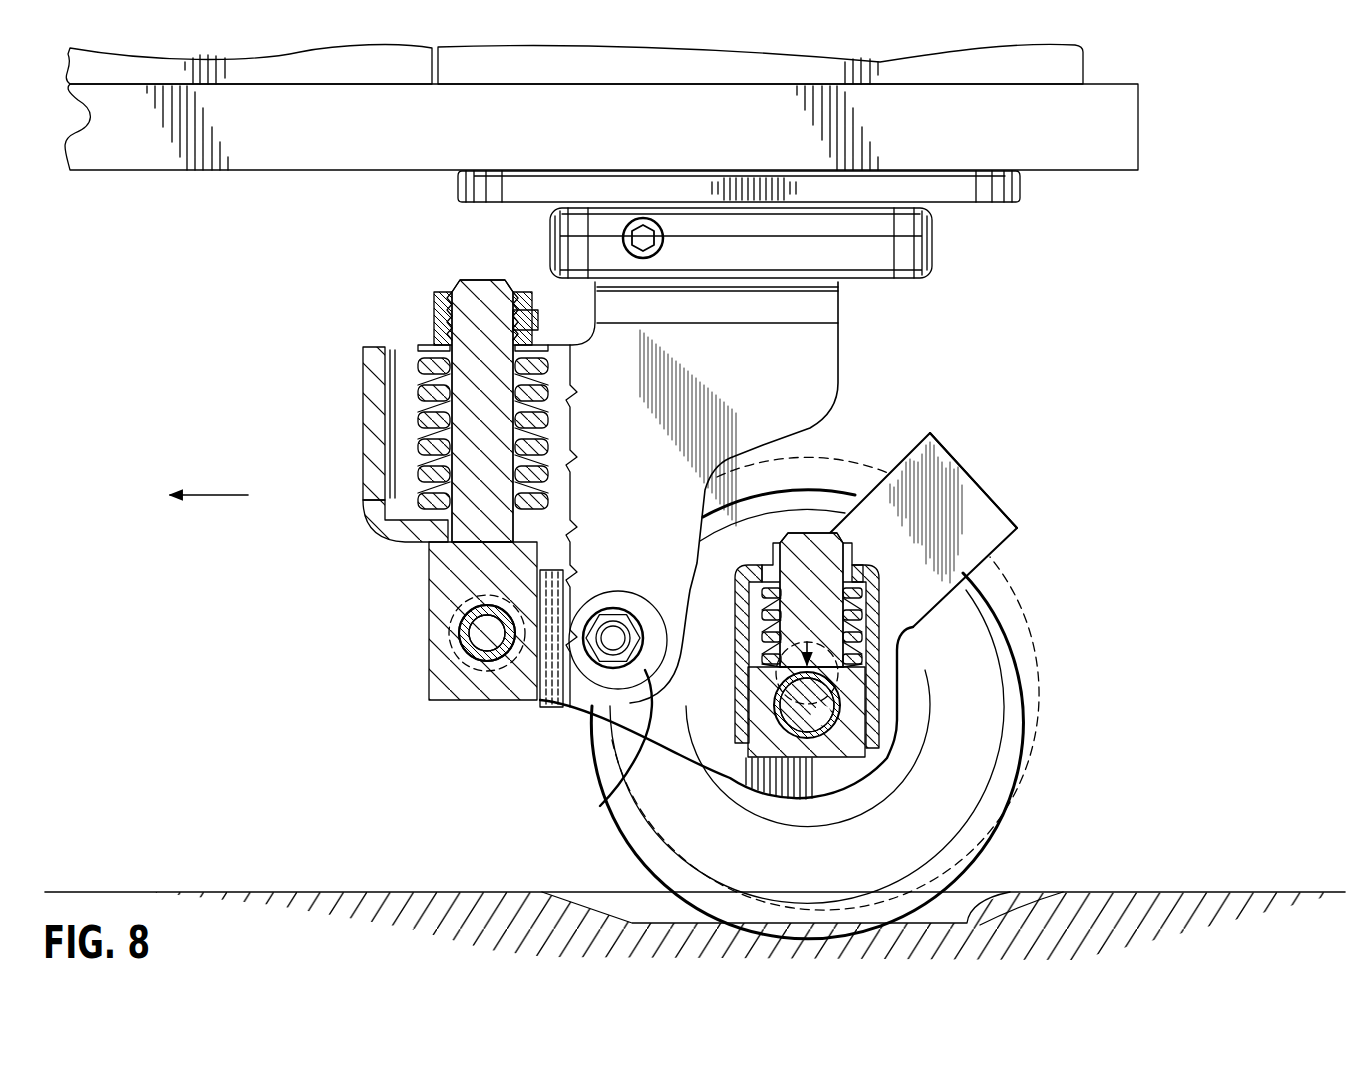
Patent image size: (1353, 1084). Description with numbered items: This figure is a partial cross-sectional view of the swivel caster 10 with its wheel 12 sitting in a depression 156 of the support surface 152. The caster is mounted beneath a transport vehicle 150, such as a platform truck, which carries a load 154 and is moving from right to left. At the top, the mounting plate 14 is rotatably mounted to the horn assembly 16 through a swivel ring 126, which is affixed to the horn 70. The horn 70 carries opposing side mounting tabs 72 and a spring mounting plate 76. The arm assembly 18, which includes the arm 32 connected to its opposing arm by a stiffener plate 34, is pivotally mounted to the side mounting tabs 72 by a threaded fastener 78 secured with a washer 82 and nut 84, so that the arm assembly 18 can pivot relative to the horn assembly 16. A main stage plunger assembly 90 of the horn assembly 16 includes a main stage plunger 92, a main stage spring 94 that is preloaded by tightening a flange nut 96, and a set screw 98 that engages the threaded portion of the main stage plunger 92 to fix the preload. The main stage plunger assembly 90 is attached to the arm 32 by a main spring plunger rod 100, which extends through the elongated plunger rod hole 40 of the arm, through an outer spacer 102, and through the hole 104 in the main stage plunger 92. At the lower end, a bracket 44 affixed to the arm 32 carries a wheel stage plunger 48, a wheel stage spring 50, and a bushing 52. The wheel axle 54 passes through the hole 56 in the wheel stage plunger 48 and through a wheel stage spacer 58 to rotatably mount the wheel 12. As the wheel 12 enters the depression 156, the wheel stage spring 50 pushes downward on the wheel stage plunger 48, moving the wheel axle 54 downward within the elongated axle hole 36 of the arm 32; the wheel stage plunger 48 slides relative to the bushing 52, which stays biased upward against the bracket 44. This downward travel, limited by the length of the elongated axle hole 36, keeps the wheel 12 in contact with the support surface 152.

The swivel caster 10 is at (1086, 344).
The wheel 12 is at (832, 876).
The mounting plate 14 is at (1014, 187).
The horn assembly 16 is at (432, 272).
The arm assembly 18 is at (1008, 491).
The arm 32 is at (915, 553).
The stiffener plate 34 is at (948, 458).
The elongated axle hole 36 is at (872, 736).
The elongated plunger rod hole 40 is at (447, 642).
The bracket 44 is at (878, 588).
The wheel stage plunger 48 is at (760, 750).
The wheel stage spring 50 is at (864, 622).
The bushing 52 is at (843, 520).
The wheel axle 54 is at (824, 701).
The hole 56 is at (830, 714).
The wheel stage spacer 58 is at (820, 682).
The horn 70 is at (843, 346).
The side mounting tabs 72 is at (660, 490).
The spring mounting plate 76 is at (412, 503).
The threaded fastener 78 is at (612, 647).
The washer 82 is at (655, 750).
The nut 84 is at (640, 692).
The main stage plunger assembly 90 is at (489, 278).
The main stage plunger 92 is at (470, 410).
The main stage spring 94 is at (420, 368).
The flange nut 96 is at (440, 311).
The set screw 98 is at (538, 325).
The main spring plunger rod 100 is at (478, 635).
The outer spacer 102 is at (468, 610).
The hole 104 is at (470, 657).
The swivel ring 126 is at (932, 254).
The transport vehicle 150 is at (642, 142).
The support surface 152 is at (1190, 891).
The load 154 is at (389, 78).
The depression 156 is at (1010, 892).